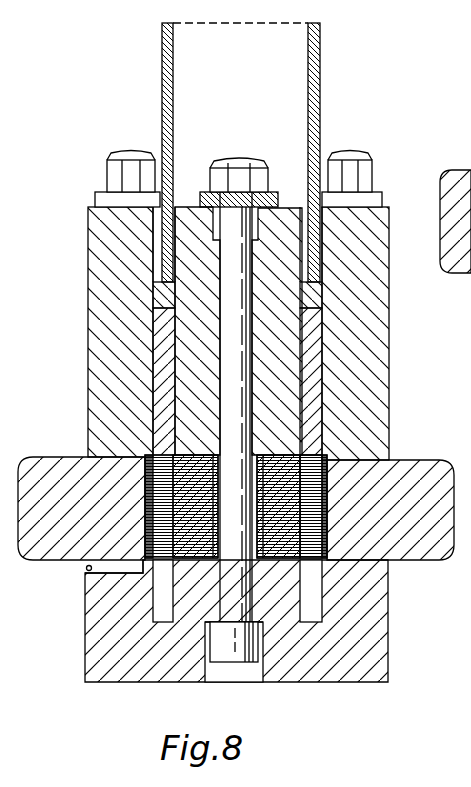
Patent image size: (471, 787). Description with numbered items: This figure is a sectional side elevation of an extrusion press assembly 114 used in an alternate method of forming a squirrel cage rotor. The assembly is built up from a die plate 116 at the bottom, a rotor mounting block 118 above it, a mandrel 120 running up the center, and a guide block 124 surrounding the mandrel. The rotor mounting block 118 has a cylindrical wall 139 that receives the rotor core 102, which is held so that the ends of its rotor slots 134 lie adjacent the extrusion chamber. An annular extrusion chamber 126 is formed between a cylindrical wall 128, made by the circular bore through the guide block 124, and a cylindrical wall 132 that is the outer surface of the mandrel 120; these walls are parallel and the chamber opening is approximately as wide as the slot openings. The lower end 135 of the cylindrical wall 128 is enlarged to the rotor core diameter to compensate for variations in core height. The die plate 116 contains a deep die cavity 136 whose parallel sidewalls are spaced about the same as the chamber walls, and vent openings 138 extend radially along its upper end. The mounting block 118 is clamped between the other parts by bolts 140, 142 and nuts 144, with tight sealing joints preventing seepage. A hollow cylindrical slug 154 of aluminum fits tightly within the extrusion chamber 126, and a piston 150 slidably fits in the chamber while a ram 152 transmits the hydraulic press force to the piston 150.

The rotor core 102 is at (138, 511).
The extrusion press assembly 114 is at (76, 266).
The die plate 116 is at (368, 634).
The rotor mounting block 118 is at (455, 446).
The mandrel 120 is at (290, 210).
The guide block 124 is at (376, 333).
The annular extrusion chamber 126 is at (173, 206).
The cylindrical wall 128 is at (322, 336).
The cylindrical wall 132 is at (305, 395).
The rotor slots 134 is at (322, 531).
The lower end 135 is at (150, 458).
The die cavity 136 is at (322, 598).
The vent openings 138 is at (86, 572).
The cylindrical wall 139 is at (330, 496).
The bolt 140 is at (232, 162).
The bolt 142 is at (130, 157).
The nuts 144 is at (107, 178).
The piston 150 is at (165, 296).
The ram 152 is at (318, 86).
The hollow cylindrical slug 154 is at (160, 337).